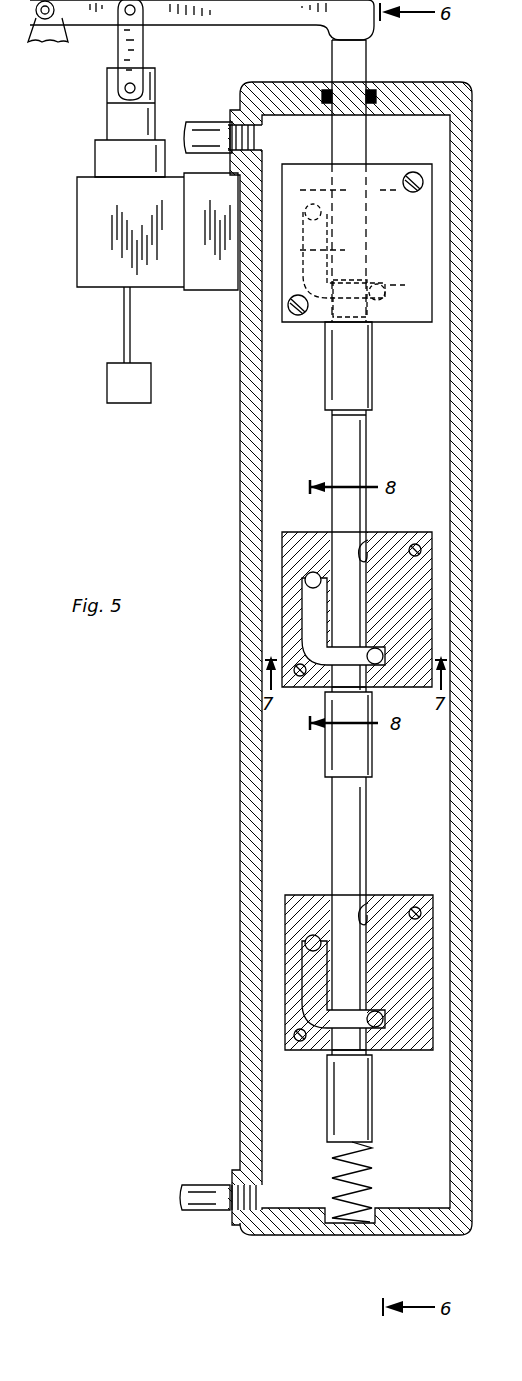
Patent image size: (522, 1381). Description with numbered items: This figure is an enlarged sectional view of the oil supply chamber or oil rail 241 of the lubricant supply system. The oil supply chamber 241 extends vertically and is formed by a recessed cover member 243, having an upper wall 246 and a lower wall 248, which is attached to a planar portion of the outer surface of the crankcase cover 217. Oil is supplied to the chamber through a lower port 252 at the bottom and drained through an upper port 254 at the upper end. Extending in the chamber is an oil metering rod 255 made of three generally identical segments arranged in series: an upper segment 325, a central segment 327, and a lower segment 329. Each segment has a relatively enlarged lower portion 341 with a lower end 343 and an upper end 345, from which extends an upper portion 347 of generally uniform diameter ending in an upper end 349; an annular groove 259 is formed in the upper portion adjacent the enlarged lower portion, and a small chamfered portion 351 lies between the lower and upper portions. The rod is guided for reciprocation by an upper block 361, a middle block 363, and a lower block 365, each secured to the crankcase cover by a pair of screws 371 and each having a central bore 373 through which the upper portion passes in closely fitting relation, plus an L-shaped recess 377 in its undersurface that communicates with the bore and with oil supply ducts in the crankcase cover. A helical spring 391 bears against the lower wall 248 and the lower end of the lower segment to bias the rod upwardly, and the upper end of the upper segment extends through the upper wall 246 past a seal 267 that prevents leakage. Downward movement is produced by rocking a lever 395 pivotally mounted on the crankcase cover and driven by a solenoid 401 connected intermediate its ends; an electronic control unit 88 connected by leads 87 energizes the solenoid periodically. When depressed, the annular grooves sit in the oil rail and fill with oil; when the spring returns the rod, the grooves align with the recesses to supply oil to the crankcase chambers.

The crankcase cover 217 is at (46, 44).
The lever 395 is at (240, 14).
The upper port 254 is at (212, 124).
The solenoid 401 is at (92, 222).
The leads 87 is at (124, 324).
The electronic control unit 88 is at (128, 404).
The seal 267 is at (322, 94).
The upper end 349 is at (366, 45).
The upper wall 246 is at (428, 86).
The upper portion 347 is at (345, 133).
The screws 371 is at (288, 302).
The upper block 361 is at (405, 212).
The annular groove 259 is at (356, 252).
The chamfered portion 351 is at (337, 326).
The upper end 345 is at (355, 345).
The enlarged lower portion 341 is at (348, 370).
The upper segment 325 is at (325, 384).
The oil supply chamber 241 is at (415, 395).
The lower end 343 is at (372, 412).
The central bore 373 is at (368, 540).
The middle block 363 is at (290, 555).
The L-shaped recess 377 is at (312, 615).
The central segment 327 is at (328, 758).
The oil metering rod 255 is at (330, 853).
The cover member 243 is at (250, 918).
The lower block 365 is at (410, 960).
The lower segment 329 is at (332, 1090).
The lower port 252 is at (246, 1225).
The helical spring 391 is at (332, 1180).
The lower wall 248 is at (435, 1218).